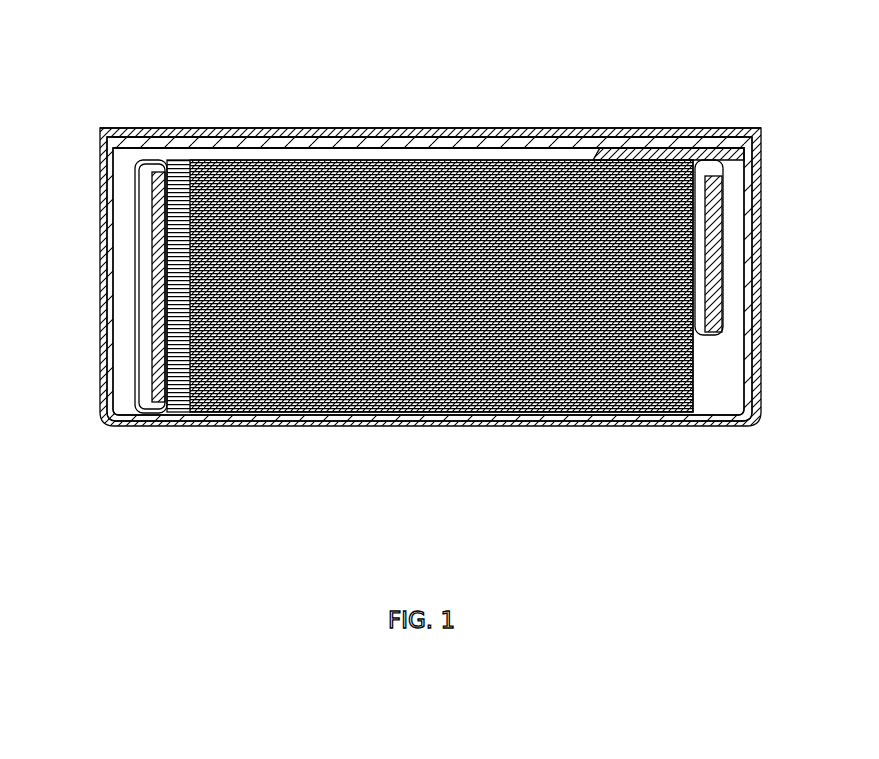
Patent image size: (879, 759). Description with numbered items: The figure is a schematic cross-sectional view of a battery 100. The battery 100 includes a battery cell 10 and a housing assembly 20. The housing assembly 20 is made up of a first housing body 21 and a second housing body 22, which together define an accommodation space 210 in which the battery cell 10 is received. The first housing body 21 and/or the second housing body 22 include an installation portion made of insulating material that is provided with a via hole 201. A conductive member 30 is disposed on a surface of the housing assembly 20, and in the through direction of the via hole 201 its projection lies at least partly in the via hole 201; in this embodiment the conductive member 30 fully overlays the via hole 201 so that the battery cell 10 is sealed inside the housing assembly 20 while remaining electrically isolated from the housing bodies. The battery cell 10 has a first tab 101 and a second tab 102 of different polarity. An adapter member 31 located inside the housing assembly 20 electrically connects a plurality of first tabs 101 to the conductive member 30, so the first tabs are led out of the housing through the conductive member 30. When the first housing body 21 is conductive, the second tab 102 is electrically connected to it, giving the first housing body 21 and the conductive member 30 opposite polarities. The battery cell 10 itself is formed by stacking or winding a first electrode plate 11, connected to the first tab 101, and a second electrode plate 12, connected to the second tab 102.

The battery 100 is at (367, 35).
The housing assembly 20 is at (197, 86).
The first housing body 21 is at (105, 128).
The second housing body 22 is at (167, 133).
The via hole 201 is at (368, 128).
The accommodation space 210 is at (720, 405).
The conductive member 30 is at (467, 145).
The adapter member 31 is at (610, 157).
The battery cell 10 is at (247, 474).
The first electrode plate 11 is at (188, 405).
The second electrode plate 12 is at (240, 403).
The first tab 101 is at (708, 212).
The second tab 102 is at (140, 262).